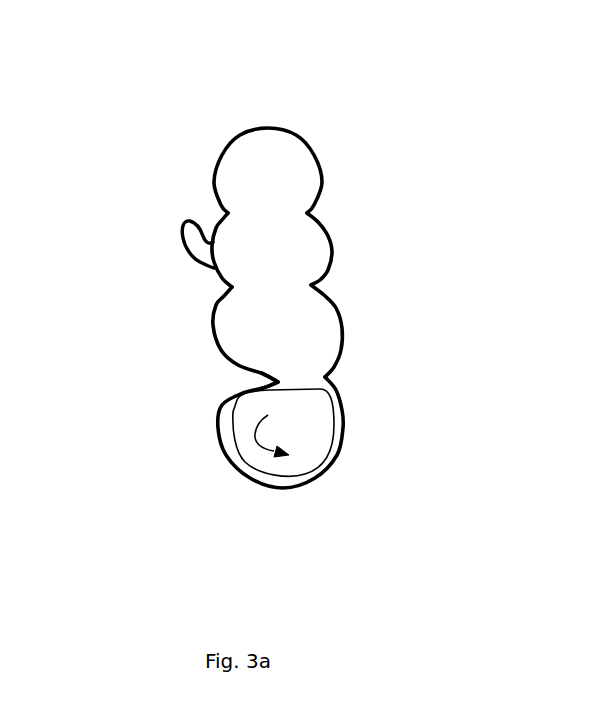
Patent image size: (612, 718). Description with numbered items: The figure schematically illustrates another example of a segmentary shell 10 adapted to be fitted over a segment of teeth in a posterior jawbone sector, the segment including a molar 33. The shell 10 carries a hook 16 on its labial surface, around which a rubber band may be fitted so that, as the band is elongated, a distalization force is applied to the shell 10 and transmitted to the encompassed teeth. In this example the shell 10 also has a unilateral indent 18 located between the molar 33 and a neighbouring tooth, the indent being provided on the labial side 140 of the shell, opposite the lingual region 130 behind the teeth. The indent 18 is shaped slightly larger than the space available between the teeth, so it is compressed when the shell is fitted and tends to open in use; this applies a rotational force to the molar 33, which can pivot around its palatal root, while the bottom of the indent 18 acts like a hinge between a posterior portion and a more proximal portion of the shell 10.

The segmentary shell 10 is at (275, 128).
The hook 16 is at (183, 225).
The unilateral indent 18 is at (243, 375).
The molar 33 is at (297, 462).
The lingual region 130 is at (400, 353).
The labial side 140 is at (167, 363).